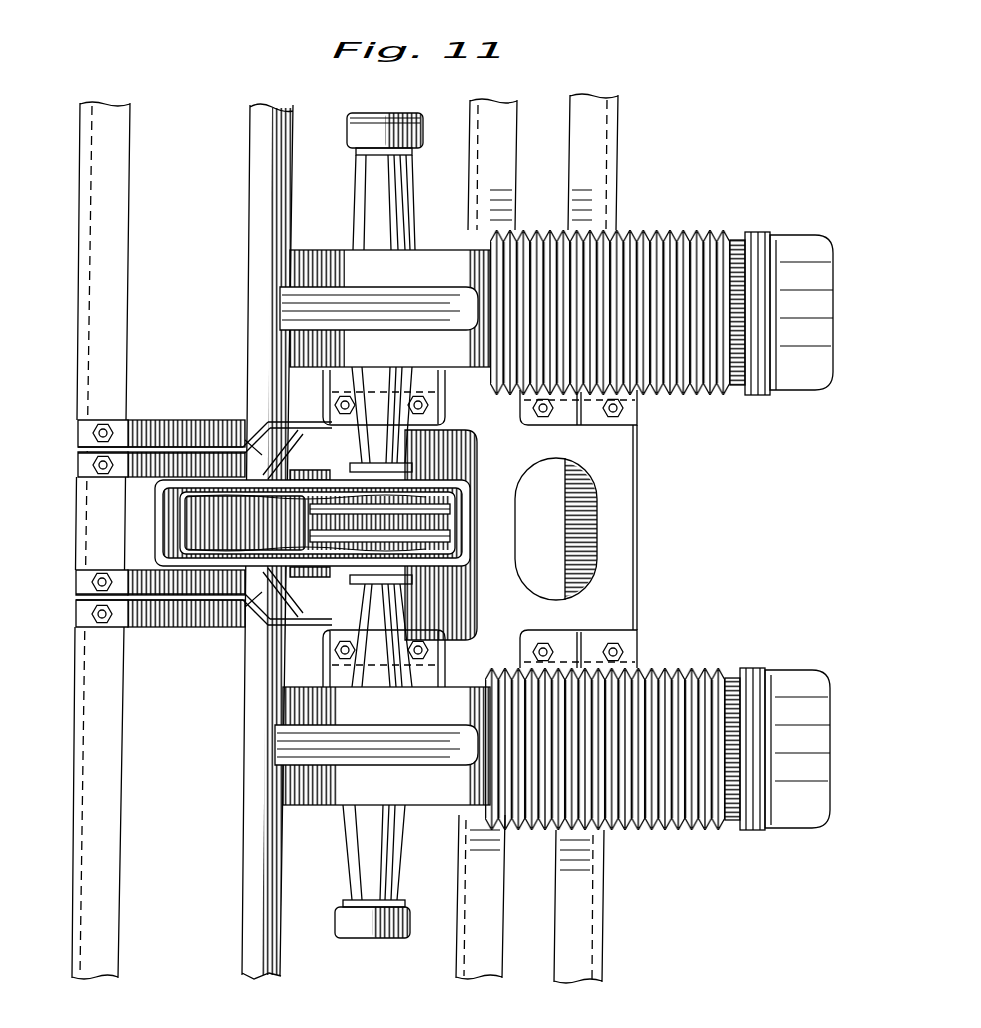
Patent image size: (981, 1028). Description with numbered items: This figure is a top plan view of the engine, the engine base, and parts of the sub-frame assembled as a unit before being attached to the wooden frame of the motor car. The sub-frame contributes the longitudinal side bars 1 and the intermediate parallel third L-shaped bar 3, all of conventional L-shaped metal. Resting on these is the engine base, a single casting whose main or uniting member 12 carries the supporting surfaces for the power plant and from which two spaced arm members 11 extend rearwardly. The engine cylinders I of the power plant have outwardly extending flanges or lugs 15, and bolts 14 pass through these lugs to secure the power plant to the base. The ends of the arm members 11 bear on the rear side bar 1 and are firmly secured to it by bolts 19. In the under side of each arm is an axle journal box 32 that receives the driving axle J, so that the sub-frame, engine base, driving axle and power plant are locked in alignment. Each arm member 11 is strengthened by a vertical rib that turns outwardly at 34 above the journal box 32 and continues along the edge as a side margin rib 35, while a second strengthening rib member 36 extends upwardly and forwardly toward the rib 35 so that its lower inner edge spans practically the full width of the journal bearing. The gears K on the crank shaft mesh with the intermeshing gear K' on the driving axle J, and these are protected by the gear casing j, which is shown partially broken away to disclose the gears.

The longitudinal side bar 1 is at (106, 750).
The third L-shaped bar 3 is at (480, 897).
The driving axle J is at (262, 302).
The engine cylinder I is at (688, 668).
The gear casing j is at (172, 500).
The gear K is at (276, 523).
The intermeshing gear K' is at (404, 523).
The arm member 11 is at (186, 430).
The main or uniting member 12 is at (576, 527).
The bolt 14 is at (338, 406).
The flange or lug 15 is at (300, 378).
The bolt 19 is at (98, 428).
The axle journal box 32 is at (243, 446).
The outward rib portion 34 is at (242, 444).
The side margin rib 35 is at (108, 450).
The second strengthening rib member 36 is at (290, 440).